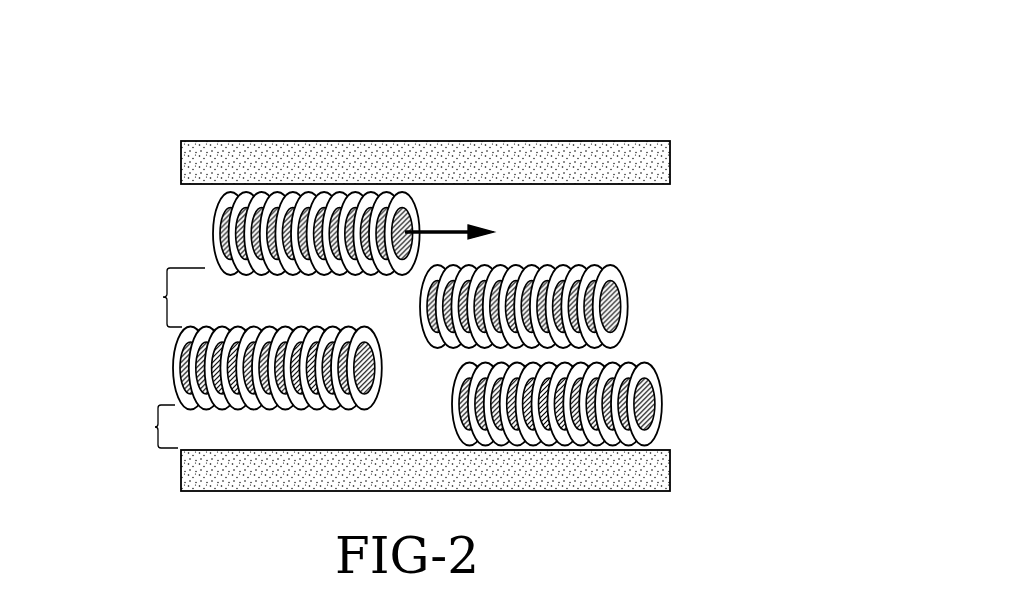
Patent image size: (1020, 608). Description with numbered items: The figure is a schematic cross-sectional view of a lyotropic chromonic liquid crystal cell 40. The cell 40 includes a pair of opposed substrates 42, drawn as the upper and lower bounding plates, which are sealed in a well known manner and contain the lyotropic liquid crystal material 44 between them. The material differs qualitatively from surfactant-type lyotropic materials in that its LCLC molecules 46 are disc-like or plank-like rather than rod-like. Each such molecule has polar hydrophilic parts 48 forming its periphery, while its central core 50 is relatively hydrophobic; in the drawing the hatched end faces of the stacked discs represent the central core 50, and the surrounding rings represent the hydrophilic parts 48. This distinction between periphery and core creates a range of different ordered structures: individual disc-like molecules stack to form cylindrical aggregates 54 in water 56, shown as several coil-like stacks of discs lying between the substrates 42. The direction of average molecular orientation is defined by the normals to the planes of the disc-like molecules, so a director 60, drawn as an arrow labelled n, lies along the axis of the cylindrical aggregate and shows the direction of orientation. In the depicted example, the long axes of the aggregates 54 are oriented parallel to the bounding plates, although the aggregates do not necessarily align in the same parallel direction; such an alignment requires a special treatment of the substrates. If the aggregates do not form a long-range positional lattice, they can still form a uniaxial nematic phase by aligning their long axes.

The lyotropic chromonic liquid crystal cell 40 is at (443, 264).
The substrates 42 is at (670, 165).
The lyotropic liquid crystal material 44 is at (630, 336).
The LCLC molecules 46 is at (627, 327).
The polar hydrophilic parts 48 is at (583, 295).
The central core 50 is at (617, 295).
The cylindrical aggregates 54 is at (200, 226).
The water 56 is at (163, 297).
The director 60 is at (445, 232).